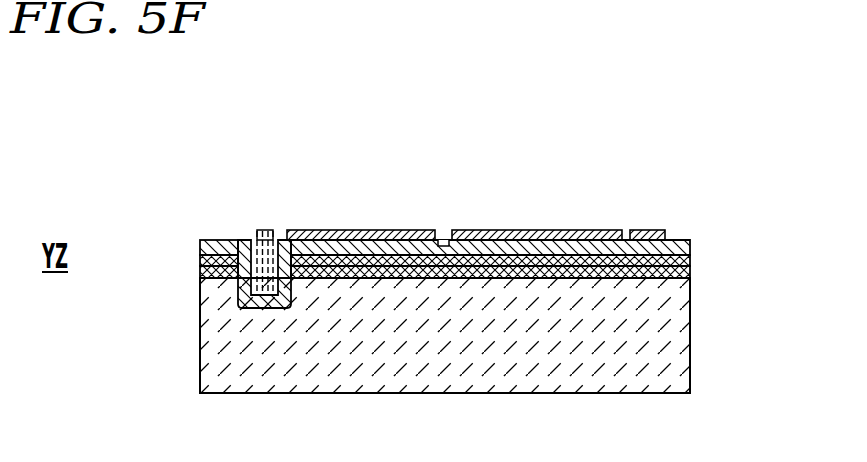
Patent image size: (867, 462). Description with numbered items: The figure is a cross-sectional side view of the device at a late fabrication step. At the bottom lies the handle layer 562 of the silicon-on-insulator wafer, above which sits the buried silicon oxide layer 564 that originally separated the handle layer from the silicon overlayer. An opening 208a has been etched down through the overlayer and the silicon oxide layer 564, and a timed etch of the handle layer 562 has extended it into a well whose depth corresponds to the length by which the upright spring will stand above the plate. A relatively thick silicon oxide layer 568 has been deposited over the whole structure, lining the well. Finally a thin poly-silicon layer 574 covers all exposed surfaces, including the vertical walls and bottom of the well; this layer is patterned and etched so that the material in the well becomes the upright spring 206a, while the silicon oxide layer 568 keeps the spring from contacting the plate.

The upright spring 206a is at (268, 229).
The opening 208a is at (248, 219).
The handle layer 562 is at (212, 352).
The silicon oxide layer 564 is at (200, 272).
The silicon oxide layer 568 is at (200, 247).
The poly-silicon layer 574 is at (331, 218).